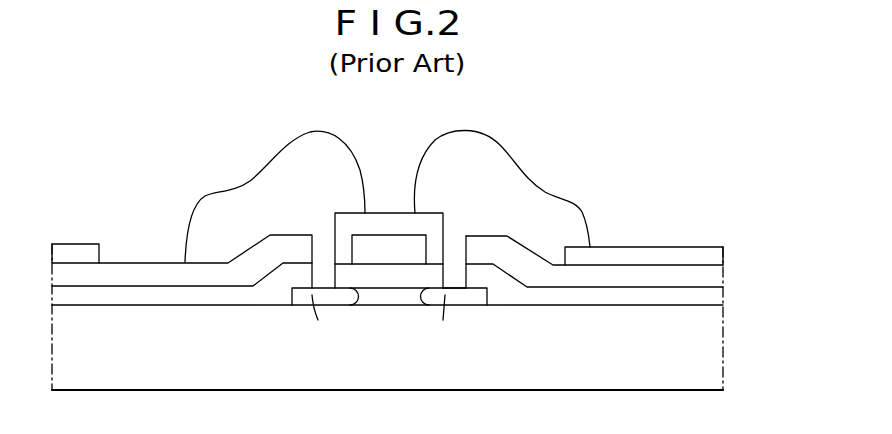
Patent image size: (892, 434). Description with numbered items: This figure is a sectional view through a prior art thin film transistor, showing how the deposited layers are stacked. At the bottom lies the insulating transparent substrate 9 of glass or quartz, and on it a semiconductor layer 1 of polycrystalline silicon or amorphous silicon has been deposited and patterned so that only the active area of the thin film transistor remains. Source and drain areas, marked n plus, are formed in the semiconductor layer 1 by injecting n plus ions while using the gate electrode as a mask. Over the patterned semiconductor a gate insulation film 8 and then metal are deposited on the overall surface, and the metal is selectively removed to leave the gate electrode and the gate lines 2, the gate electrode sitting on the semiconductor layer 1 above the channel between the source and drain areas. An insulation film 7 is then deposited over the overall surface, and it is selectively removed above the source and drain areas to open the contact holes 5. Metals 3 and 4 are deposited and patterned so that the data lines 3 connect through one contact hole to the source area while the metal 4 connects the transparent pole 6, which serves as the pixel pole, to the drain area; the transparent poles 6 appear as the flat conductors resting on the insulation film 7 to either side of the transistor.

The semiconductor layer 1 is at (375, 297).
The gate lines 2 is at (360, 244).
The data lines 3 is at (323, 143).
The metal 4 is at (478, 148).
The contact holes 5 is at (452, 288).
The transparent pole 6 is at (72, 254).
The insulation film 7 is at (130, 272).
The gate insulation film 8 is at (722, 297).
The insulating transparent substrate 9 is at (722, 345).